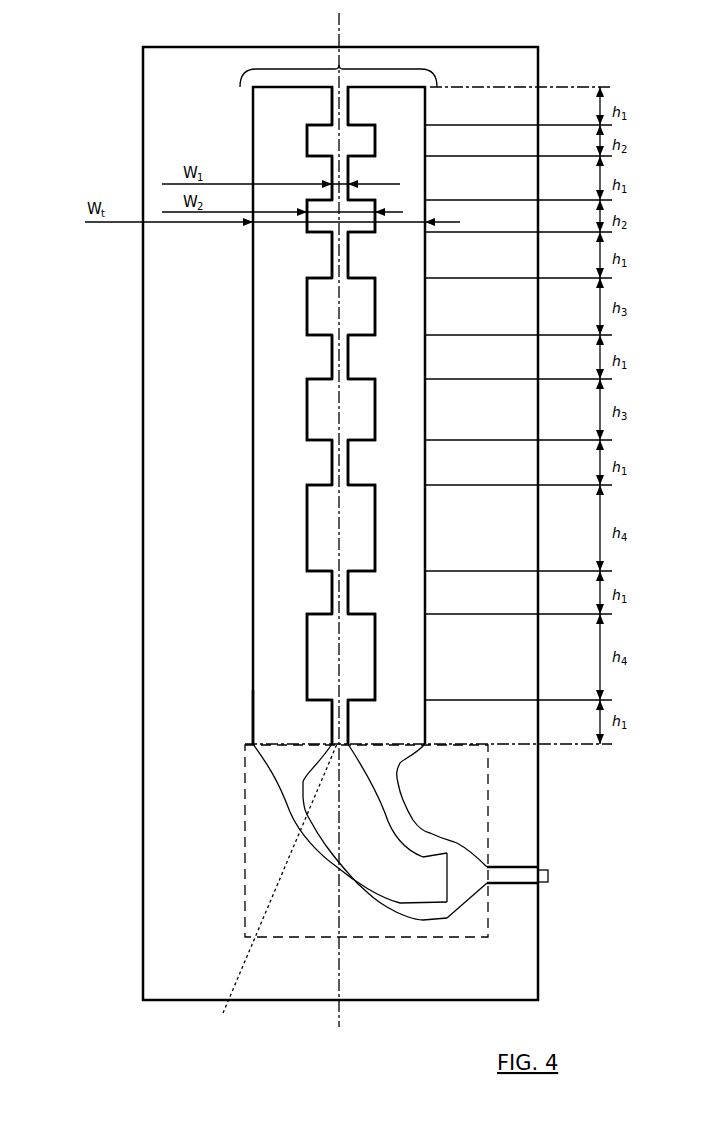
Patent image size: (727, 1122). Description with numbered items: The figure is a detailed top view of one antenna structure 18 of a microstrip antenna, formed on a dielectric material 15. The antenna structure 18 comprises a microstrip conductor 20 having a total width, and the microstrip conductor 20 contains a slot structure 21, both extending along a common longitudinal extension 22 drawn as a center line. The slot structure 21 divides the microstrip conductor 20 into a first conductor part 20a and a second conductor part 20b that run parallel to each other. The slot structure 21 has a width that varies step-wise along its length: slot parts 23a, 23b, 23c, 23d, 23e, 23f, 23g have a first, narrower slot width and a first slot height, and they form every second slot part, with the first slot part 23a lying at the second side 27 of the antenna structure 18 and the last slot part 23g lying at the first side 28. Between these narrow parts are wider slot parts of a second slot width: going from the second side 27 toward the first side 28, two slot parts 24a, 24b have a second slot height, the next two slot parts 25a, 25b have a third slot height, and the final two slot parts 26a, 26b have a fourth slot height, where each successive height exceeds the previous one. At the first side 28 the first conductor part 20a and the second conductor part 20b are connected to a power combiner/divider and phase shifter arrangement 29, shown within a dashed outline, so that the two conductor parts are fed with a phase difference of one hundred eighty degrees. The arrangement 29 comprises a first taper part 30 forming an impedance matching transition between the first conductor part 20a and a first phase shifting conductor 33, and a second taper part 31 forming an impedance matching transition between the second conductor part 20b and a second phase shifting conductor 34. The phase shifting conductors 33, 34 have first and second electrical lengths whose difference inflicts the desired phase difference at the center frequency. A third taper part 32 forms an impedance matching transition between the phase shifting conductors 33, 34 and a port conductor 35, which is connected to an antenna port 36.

The dielectric material 15 is at (207, 908).
The antenna structure 18 is at (341, 66).
The microstrip conductor 20 is at (252, 715).
The first conductor part 20a is at (277, 702).
The second conductor part 20b is at (389, 677).
The slot structure 21 is at (268, 893).
The longitudinal extension 22 is at (338, 36).
The first slot part 23a is at (337, 112).
The slot part 23b is at (337, 167).
The slot part 23c is at (337, 262).
The slot part 23d is at (330, 350).
The slot part 23e is at (340, 460).
The slot part 23f is at (340, 580).
The last slot part 23g is at (337, 740).
The slot part 24a is at (323, 142).
The slot part 24b is at (322, 230).
The slot part 25a is at (330, 308).
The slot part 25b is at (327, 402).
The slot part 26a is at (337, 508).
The slot part 26b is at (330, 627).
The second side 27 is at (470, 87).
The first side 28 is at (510, 744).
The power combiner/divider and phase shifter arrangement 29 is at (450, 940).
The first taper part 30 is at (278, 760).
The second taper part 31 is at (398, 762).
The third taper part 32 is at (465, 888).
The first phase shifting conductor 33 is at (293, 810).
The second phase shifting conductor 34 is at (403, 820).
The port conductor 35 is at (510, 877).
The antenna port 36 is at (549, 876).